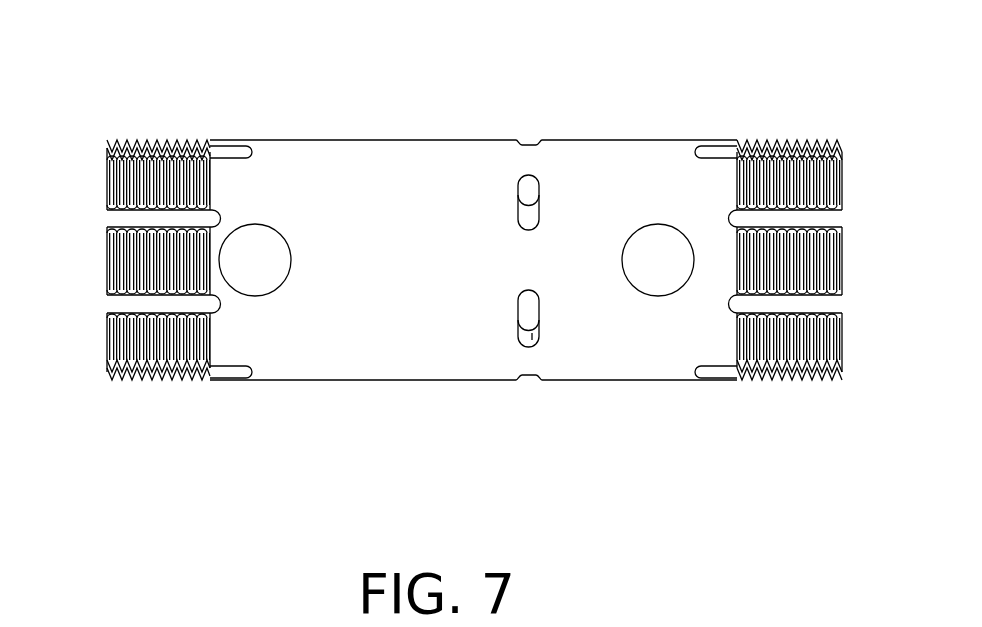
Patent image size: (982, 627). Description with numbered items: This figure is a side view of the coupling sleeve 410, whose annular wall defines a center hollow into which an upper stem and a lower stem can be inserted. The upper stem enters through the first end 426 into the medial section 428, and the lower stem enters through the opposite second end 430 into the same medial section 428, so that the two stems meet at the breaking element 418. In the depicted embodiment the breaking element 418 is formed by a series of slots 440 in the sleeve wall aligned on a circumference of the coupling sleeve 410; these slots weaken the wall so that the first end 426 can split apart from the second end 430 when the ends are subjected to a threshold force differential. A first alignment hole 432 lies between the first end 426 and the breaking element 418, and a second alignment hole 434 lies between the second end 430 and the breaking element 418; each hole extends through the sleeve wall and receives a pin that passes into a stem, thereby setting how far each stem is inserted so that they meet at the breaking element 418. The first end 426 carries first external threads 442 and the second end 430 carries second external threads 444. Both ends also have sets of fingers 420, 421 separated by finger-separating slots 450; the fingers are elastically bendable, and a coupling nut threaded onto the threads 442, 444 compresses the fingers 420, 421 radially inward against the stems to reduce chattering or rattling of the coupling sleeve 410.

The coupling sleeve 410 is at (665, 462).
The medial section 428 is at (441, 120).
The second end 430 is at (105, 108).
The first end 426 is at (793, 125).
The finger-separating slots 450 is at (115, 222).
The second external threads 444 is at (125, 270).
The first external threads 442 is at (828, 272).
The fingers 421 is at (115, 305).
The fingers 420 is at (832, 302).
The slots 440 is at (539, 297).
The breaking element 418 is at (533, 340).
The second alignment hole 434 is at (273, 297).
The first alignment hole 432 is at (656, 297).